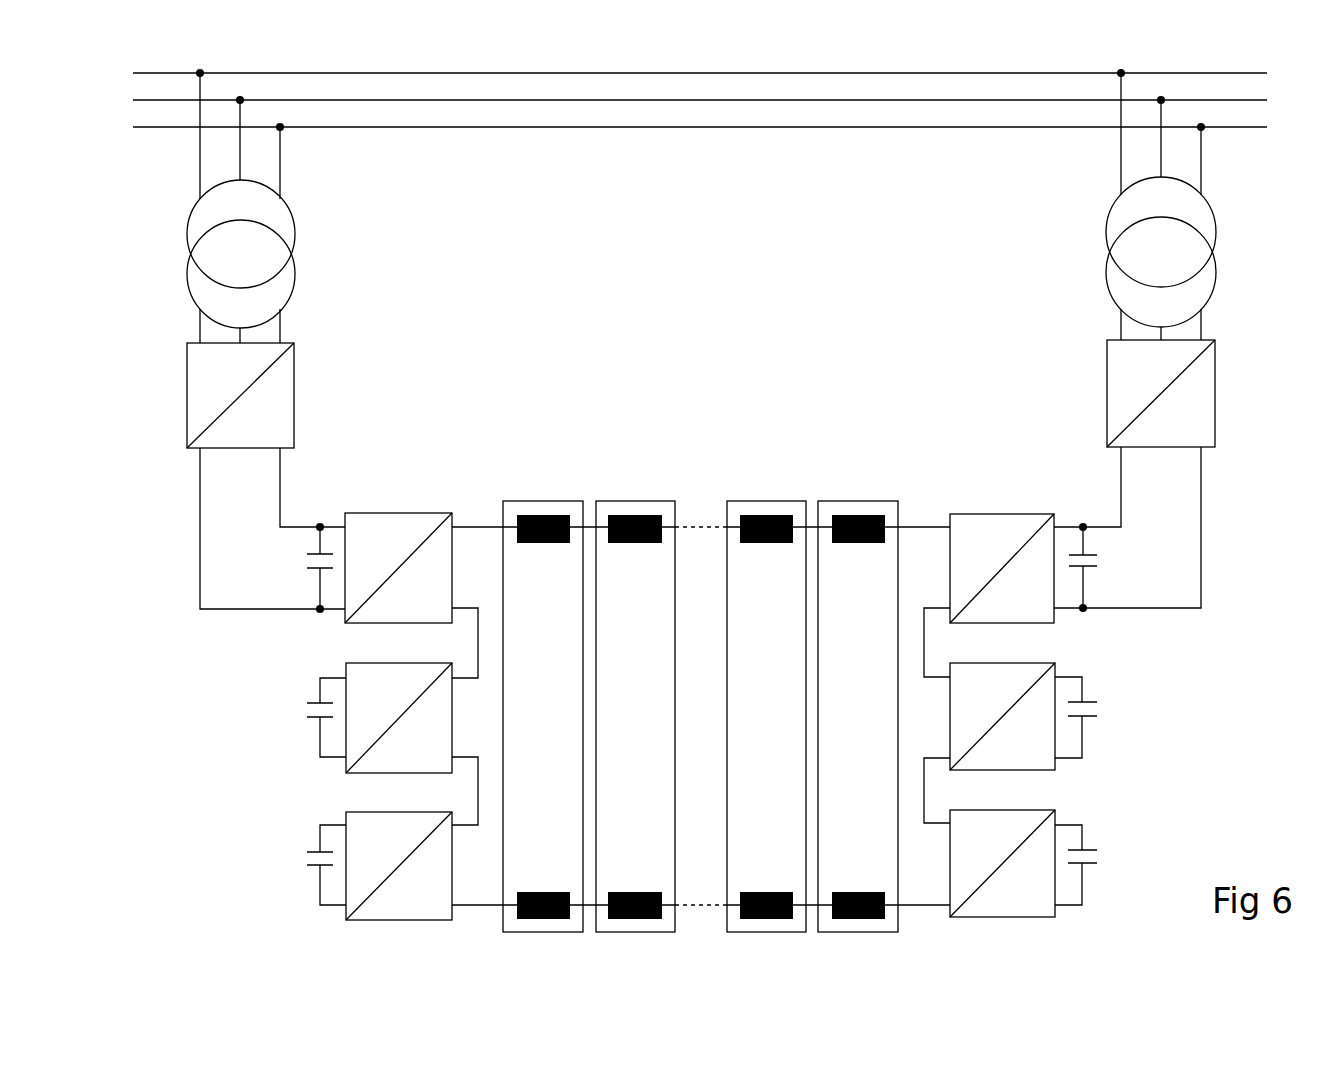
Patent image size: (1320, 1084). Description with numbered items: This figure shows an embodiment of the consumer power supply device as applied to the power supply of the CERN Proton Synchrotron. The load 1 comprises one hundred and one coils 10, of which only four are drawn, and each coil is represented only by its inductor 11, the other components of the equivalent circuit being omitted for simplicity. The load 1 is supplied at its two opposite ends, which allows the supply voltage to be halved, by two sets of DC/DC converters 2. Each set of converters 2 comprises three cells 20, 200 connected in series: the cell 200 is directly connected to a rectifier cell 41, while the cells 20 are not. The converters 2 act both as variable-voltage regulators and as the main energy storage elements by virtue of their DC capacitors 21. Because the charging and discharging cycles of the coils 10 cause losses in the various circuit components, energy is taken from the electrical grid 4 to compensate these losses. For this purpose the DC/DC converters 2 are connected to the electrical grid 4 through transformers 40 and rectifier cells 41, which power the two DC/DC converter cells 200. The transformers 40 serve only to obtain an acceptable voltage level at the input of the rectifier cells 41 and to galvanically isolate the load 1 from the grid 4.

The load 1 is at (700, 657).
The DC/DC converters 2 is at (700, 671).
The electrical grid 4 is at (685, 73).
The coils 10 is at (700, 697).
The inductors 11 is at (555, 543).
The cells 20 is at (700, 697).
The DC capacitors 21 is at (300, 560).
The transformers 40 is at (293, 258).
The rectifier cells 41 is at (282, 393).
The cells 200 is at (410, 523).